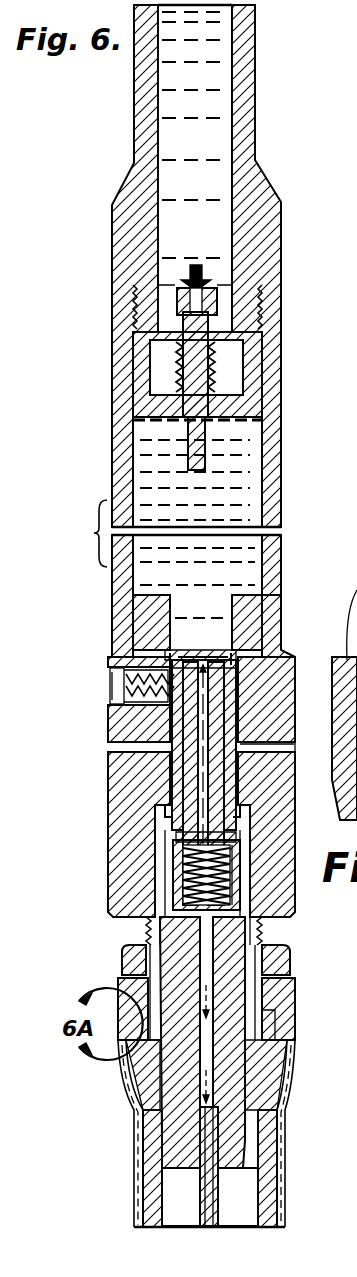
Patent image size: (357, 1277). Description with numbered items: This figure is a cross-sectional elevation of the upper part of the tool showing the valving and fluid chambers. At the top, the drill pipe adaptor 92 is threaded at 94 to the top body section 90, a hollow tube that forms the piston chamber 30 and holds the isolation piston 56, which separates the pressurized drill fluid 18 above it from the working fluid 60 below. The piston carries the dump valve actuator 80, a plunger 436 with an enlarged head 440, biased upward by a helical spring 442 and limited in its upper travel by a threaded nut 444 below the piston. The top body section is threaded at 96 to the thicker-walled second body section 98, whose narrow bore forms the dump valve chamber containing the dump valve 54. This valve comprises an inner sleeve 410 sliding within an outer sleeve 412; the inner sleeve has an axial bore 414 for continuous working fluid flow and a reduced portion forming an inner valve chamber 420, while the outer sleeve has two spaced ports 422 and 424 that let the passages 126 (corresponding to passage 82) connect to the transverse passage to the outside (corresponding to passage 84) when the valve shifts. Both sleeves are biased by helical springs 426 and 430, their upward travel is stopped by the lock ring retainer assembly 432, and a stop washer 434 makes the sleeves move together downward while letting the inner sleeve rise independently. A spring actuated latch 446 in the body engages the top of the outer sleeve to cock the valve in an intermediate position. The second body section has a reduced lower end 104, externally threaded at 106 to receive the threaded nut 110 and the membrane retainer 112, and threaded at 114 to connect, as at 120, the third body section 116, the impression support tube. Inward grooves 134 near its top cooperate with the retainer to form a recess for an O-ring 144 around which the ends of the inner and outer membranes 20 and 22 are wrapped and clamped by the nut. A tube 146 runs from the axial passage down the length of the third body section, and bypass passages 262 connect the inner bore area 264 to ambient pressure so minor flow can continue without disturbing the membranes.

The fluid under pressure 18 is at (213, 118).
The drill pipe adaptor 92 is at (270, 195).
The threaded connection 94 is at (275, 300).
The head 440 is at (178, 300).
The plunger 436 is at (190, 330).
The isolation piston 56 is at (140, 405).
The helical spring 442 is at (165, 372).
The dump valve actuator 80 is at (213, 366).
The threaded nut 444 is at (150, 443).
The working fluid 60 is at (248, 446).
The piston chamber 30 is at (243, 478).
The top body section 90 is at (276, 570).
The second body section 98 is at (258, 612).
The threaded connection 96 is at (279, 637).
The dump valve 54 is at (170, 728).
The axial bore 414 is at (128, 714).
The spring actuated latch 446 is at (104, 680).
The inward grooves 134 is at (262, 750).
The passage 84 is at (262, 755).
The lock ring retainer assembly 432 is at (170, 657).
The inner valve chamber 420 is at (178, 792).
The outer sleeve 412 is at (182, 673).
The inner sleeve 410 is at (178, 668).
The port 422 is at (226, 718).
The port 424 is at (228, 780).
The passages 126 is at (246, 812).
The passage 82 is at (250, 830).
The helical spring 426 is at (180, 860).
The helical spring 430 is at (180, 878).
The stop washer 434 is at (236, 862).
The bypass passages 262 is at (145, 930).
The reduced lower end section 104 is at (265, 948).
The external threads 106 is at (125, 965).
The threaded nut 110 is at (286, 965).
The membrane retainer 112 is at (290, 1000).
The O-ring 144 is at (276, 1025).
The inner membrane 20 is at (135, 1148).
The external threads 114 is at (286, 1110).
The threaded connection 120 is at (150, 1110).
The outer membrane 22 is at (283, 1135).
The third body section 116 is at (284, 1170).
The tube 146 is at (200, 1195).
The area 264 is at (240, 1195).